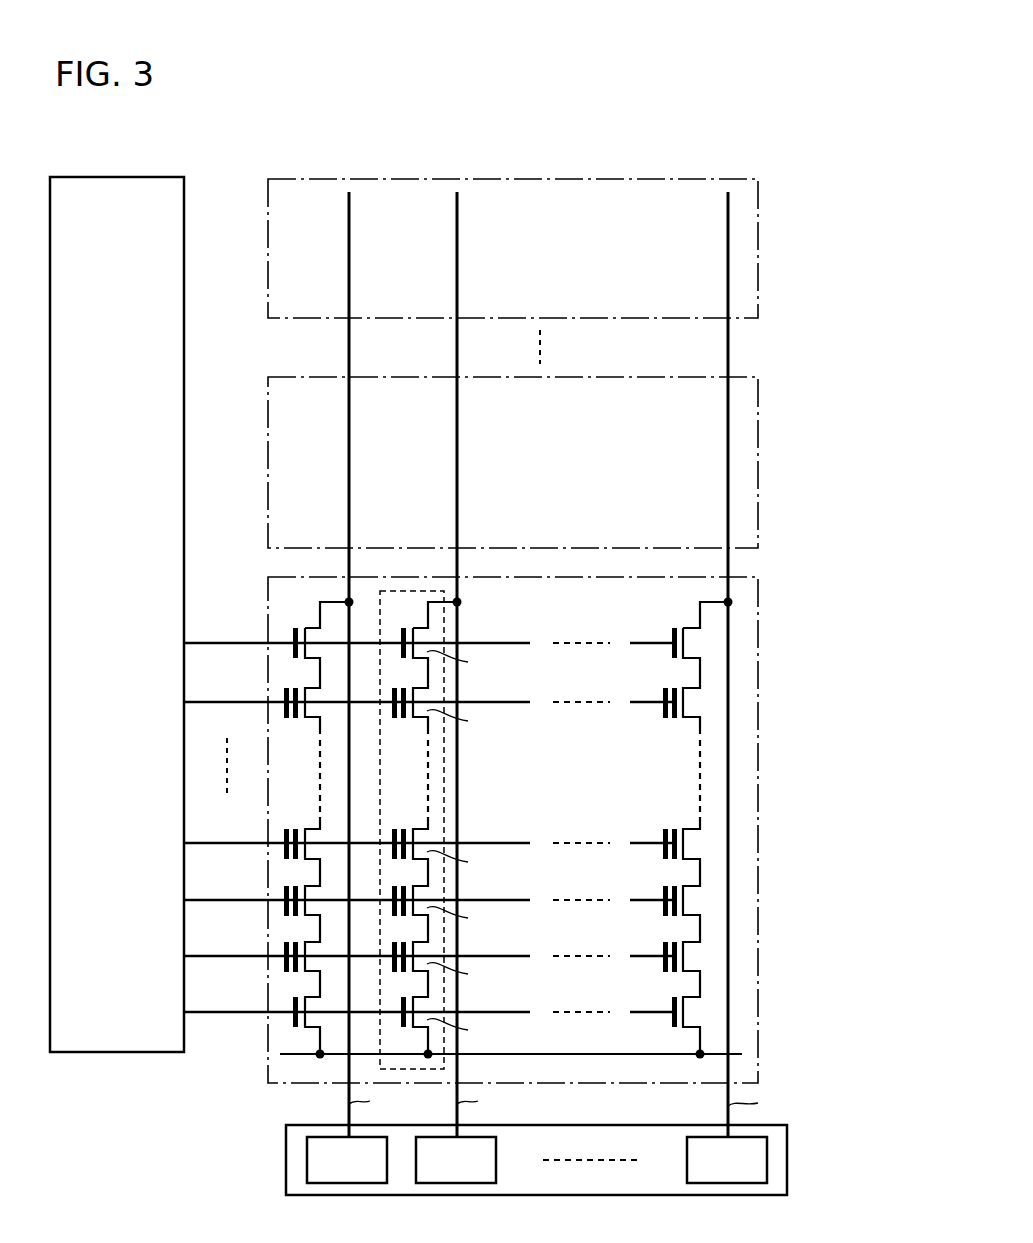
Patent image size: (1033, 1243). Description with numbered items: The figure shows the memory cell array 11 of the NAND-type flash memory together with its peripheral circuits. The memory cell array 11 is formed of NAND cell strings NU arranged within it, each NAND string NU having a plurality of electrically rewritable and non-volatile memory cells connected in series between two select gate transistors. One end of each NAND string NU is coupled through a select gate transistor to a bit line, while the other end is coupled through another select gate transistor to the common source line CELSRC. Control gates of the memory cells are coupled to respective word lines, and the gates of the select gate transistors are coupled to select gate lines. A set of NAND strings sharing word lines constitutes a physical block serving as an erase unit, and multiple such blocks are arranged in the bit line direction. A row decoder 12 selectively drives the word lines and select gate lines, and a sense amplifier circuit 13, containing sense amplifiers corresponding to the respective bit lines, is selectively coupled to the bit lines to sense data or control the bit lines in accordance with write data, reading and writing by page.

The memory cell array 11 is at (518, 625).
The row decoder 12 is at (121, 177).
The sense amplifier circuit 13 is at (286, 1163).
The NAND cell string NU is at (445, 785).
The common source line CELSRC is at (551, 1054).